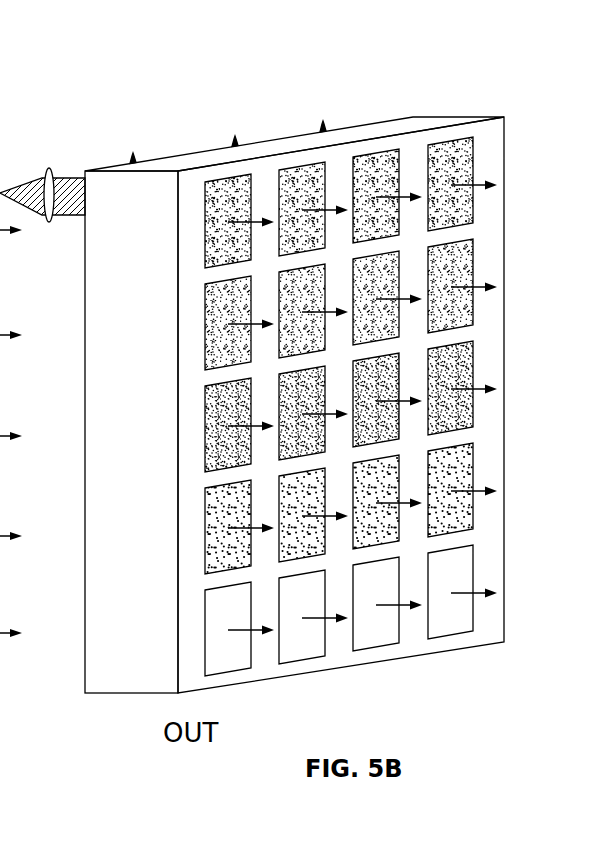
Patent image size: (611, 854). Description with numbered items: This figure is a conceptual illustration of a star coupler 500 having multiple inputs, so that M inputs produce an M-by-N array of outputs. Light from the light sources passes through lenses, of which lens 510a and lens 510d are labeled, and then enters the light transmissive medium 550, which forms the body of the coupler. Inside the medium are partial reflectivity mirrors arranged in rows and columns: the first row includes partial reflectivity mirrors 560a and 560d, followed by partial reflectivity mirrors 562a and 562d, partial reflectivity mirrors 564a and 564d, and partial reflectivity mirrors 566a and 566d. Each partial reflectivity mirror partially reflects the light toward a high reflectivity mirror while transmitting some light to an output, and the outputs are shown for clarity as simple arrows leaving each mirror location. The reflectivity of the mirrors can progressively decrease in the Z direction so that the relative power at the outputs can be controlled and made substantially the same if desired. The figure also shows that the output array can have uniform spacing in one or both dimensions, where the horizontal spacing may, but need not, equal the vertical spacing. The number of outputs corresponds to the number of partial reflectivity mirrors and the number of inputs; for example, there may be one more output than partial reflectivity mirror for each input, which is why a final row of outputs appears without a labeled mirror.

The star coupler 500 is at (220, 106).
The lens 510a is at (49, 167).
The lens 510d is at (323, 124).
The light transmissive medium 550 is at (273, 139).
The partial reflectivity mirror 560a is at (210, 238).
The partial reflectivity mirror 560d is at (465, 168).
The partial reflectivity mirror 562a is at (215, 349).
The partial reflectivity mirror 562d is at (467, 267).
The partial reflectivity mirror 564a is at (215, 453).
The partial reflectivity mirror 564d is at (463, 410).
The partial reflectivity mirror 566a is at (215, 553).
The partial reflectivity mirror 566d is at (463, 513).